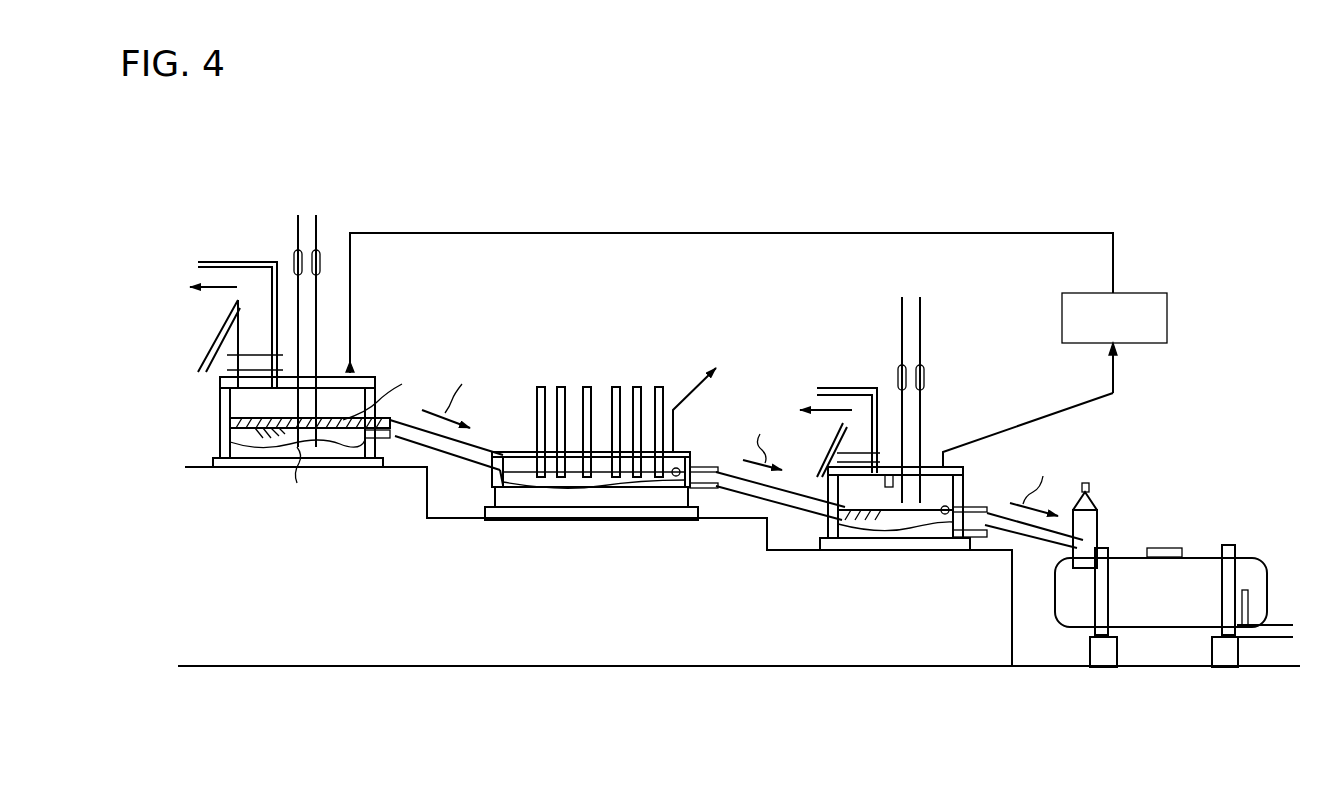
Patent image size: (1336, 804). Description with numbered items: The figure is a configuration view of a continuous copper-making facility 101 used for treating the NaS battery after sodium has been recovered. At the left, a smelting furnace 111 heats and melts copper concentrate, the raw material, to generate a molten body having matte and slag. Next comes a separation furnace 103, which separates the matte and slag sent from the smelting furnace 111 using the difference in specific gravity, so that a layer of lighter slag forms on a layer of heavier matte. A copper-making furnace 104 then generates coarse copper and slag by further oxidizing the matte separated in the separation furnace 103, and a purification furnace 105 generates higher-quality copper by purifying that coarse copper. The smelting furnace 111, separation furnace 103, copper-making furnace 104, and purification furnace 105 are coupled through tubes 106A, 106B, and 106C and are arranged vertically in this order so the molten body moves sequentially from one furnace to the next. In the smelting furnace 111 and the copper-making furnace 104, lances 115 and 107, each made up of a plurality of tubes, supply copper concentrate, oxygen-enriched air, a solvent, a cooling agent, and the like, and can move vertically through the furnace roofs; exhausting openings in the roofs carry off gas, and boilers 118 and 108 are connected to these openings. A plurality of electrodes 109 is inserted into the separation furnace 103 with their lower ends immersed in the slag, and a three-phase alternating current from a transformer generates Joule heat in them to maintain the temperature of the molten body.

The continuous copper-making facility 101 is at (982, 203).
The separation furnace 103 is at (627, 355).
The copper-making furnace 104 is at (884, 573).
The purification furnace 105 is at (1186, 530).
The tube 106A is at (453, 456).
The tube 106B is at (795, 500).
The tube 106C is at (1033, 556).
The lance 107 is at (923, 330).
The boiler 108 is at (840, 388).
The electrodes 109 is at (613, 387).
The smelting furnace 111 is at (370, 327).
The lance 115 is at (318, 227).
The boiler 118 is at (242, 262).